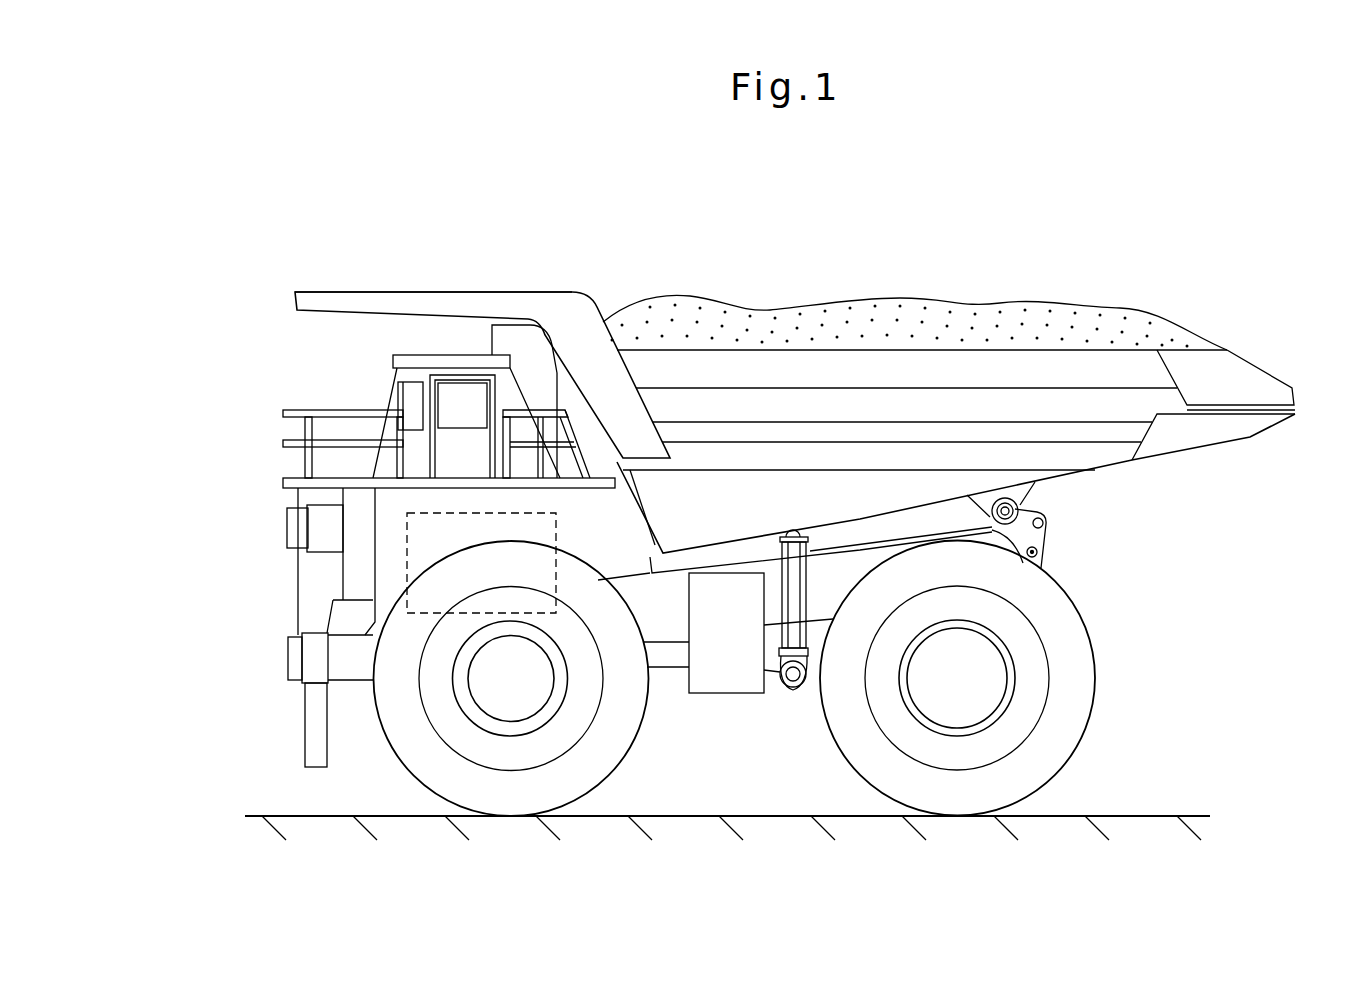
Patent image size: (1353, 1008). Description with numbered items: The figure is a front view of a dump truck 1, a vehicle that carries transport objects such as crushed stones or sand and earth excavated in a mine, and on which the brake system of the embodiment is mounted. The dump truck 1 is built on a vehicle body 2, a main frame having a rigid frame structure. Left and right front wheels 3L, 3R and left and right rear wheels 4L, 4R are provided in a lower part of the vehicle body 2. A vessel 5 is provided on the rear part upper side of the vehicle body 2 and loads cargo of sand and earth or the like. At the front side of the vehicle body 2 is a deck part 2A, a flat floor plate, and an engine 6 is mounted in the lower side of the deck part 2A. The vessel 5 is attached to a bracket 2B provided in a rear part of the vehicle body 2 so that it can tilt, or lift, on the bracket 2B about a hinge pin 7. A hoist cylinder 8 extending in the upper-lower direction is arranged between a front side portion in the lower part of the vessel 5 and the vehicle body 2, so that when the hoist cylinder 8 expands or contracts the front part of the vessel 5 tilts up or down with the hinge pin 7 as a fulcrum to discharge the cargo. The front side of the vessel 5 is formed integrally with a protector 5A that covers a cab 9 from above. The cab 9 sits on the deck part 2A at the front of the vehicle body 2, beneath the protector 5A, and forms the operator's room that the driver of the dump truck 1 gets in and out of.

The dump truck 1 is at (578, 250).
The vehicle body 2 is at (667, 620).
The deck part 2A is at (355, 487).
The bracket 2B is at (1028, 535).
The left front wheel 3L is at (395, 723).
The right front wheel 3R is at (510, 678).
The left rear wheel 4L is at (1086, 682).
The right rear wheel 4R is at (957, 678).
The vessel 5 is at (1002, 362).
The protector 5A is at (386, 302).
The engine 6 is at (412, 572).
The hinge pin 7 is at (1022, 508).
The hoist cylinder 8 is at (788, 622).
The cab 9 is at (457, 392).